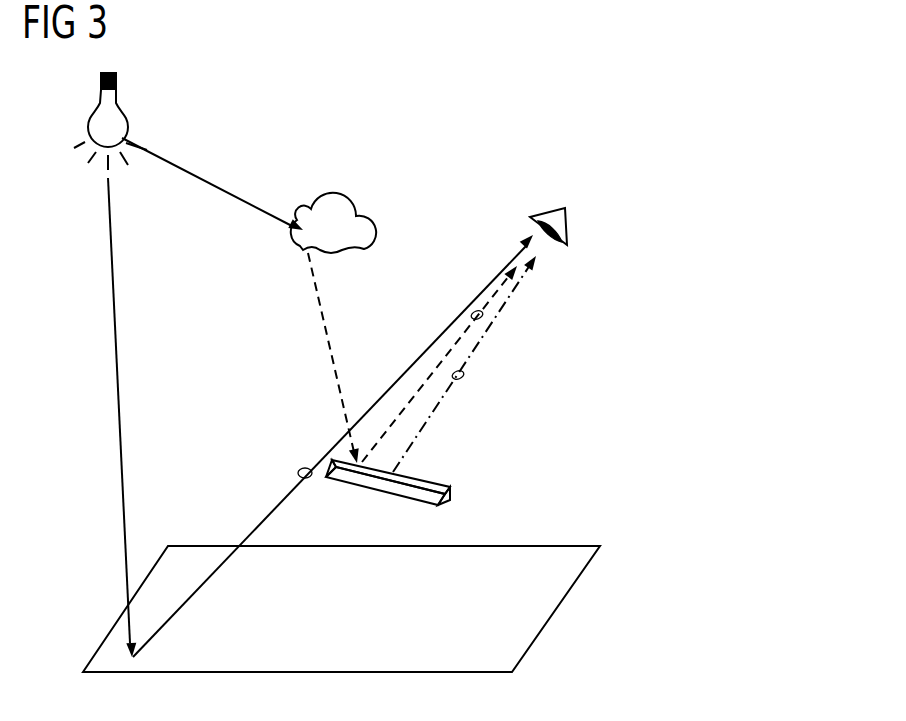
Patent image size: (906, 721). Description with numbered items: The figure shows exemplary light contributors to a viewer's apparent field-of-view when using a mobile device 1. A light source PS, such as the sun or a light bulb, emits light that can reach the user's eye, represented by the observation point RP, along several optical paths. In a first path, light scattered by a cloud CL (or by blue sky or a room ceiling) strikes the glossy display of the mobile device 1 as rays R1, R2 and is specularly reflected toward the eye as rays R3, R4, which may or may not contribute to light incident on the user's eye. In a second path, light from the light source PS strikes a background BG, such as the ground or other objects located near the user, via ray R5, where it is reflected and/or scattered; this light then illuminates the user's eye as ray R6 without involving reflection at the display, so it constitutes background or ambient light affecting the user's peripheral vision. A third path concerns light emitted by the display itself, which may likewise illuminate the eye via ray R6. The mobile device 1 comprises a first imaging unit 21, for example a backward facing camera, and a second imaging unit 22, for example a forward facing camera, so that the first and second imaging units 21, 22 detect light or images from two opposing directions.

The light source PS is at (87, 126).
The cloud CL is at (334, 193).
The observation point (observer) RP is at (547, 210).
The ray R1 is at (283, 358).
The ray R2 is at (322, 313).
The ray R3 is at (481, 364).
The ray R4 is at (484, 313).
The ray R5 is at (300, 470).
The ray R6 is at (465, 375).
The mobile device 1 is at (383, 471).
The first imaging unit 21 is at (350, 455).
The second imaging unit 22 is at (348, 485).
The background BG is at (548, 560).